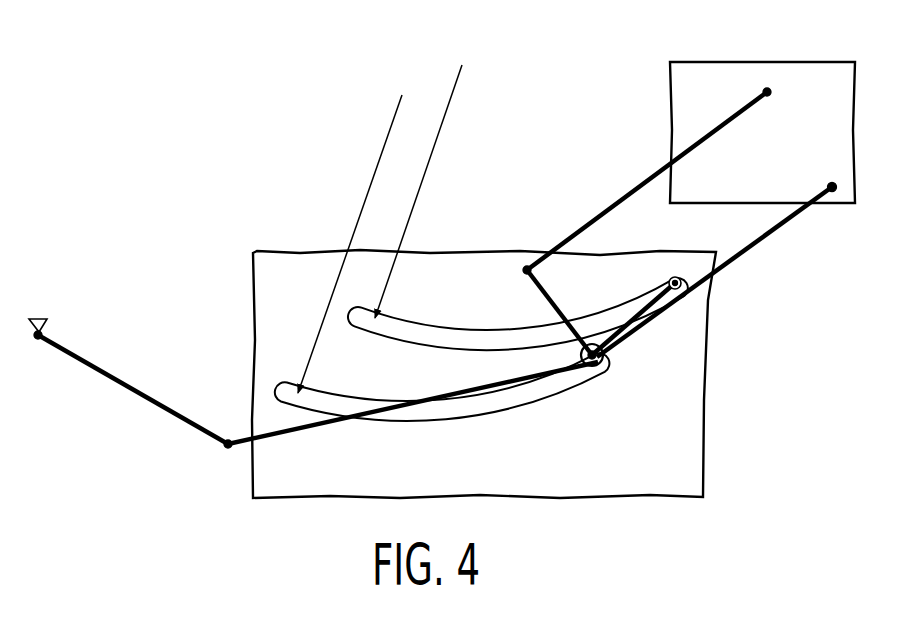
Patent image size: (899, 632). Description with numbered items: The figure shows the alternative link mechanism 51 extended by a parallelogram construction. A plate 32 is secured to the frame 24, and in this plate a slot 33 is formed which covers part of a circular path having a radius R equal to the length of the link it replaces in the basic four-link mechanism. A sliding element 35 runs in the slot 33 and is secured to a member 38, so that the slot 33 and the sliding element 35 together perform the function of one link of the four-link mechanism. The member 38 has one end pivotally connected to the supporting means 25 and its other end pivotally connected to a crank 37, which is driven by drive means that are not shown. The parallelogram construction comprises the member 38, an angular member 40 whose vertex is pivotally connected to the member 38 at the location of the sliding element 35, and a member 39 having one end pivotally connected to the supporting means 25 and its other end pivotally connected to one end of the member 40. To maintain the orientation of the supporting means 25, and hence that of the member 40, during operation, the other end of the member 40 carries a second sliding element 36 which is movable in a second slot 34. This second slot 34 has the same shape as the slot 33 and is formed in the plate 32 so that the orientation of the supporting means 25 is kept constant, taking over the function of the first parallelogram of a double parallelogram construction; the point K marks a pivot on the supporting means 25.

The frame 24 is at (48, 324).
The supporting means 25 is at (693, 71).
The plate 32 is at (262, 273).
The slot 33 is at (428, 421).
The second slot 34 is at (432, 339).
The sliding element 35 is at (597, 368).
The second sliding element 36 is at (675, 276).
The crank 37 is at (106, 376).
The member 38 is at (303, 429).
The member 39 is at (605, 211).
The angular member 40 is at (555, 305).
The alternative link mechanism 51 is at (183, 440).
The radius R is at (361, 212).
The crank point K is at (832, 185).